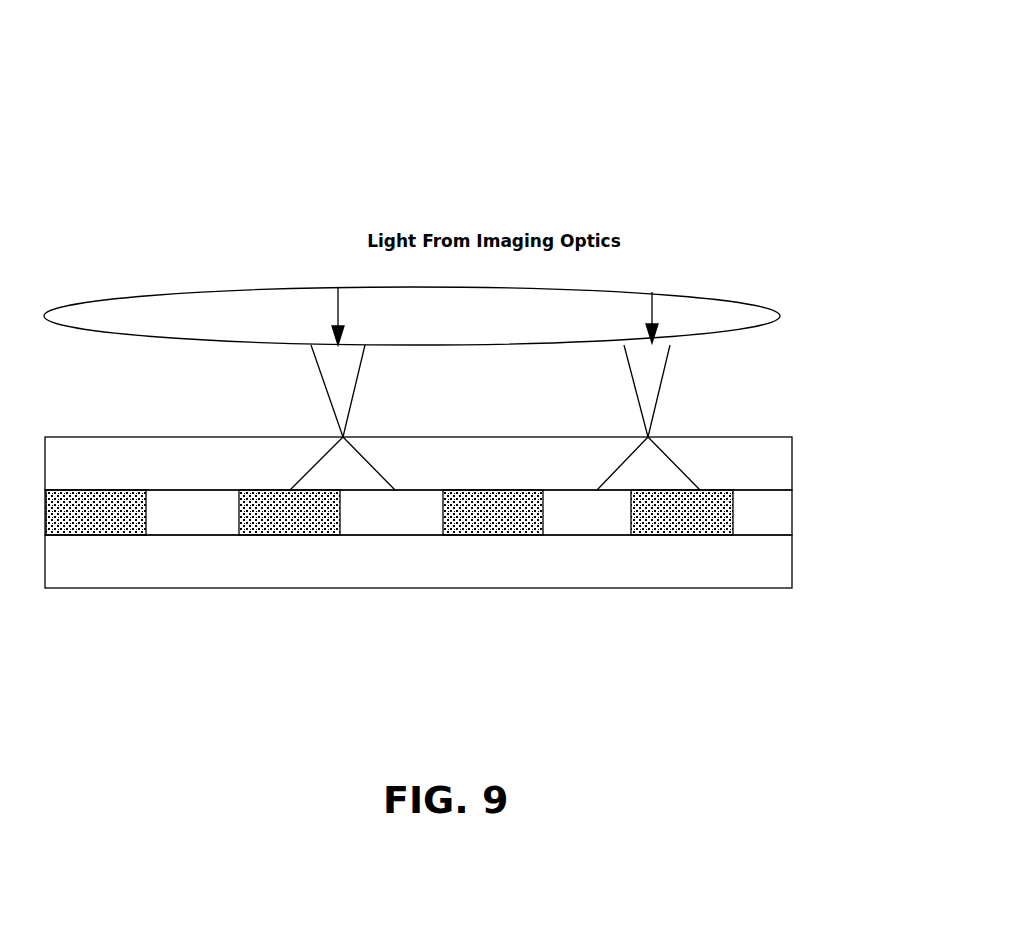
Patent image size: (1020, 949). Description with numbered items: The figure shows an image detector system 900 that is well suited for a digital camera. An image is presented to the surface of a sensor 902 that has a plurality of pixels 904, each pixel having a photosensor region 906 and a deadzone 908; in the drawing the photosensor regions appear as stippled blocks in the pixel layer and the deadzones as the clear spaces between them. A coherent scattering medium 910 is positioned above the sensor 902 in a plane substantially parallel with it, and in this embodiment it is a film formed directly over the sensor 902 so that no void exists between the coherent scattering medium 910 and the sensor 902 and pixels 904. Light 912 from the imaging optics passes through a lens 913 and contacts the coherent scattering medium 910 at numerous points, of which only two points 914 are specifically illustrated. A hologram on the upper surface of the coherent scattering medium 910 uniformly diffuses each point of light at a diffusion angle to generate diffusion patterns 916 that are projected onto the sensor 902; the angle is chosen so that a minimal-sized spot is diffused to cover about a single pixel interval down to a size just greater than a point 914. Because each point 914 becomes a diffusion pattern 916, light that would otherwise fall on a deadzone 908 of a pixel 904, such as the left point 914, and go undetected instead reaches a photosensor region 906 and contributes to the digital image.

The image detector system 900 is at (496, 62).
The lens 913 is at (695, 293).
The light from imaging optics 912 is at (360, 380).
The points 914 is at (343, 437).
The diffusion patterns 916 is at (350, 465).
The coherent scattering medium 910 is at (792, 465).
The pixels 904 is at (792, 512).
The sensor 902 is at (792, 556).
The photosensor regions 906 is at (305, 520).
The deadzones 908 is at (190, 513).